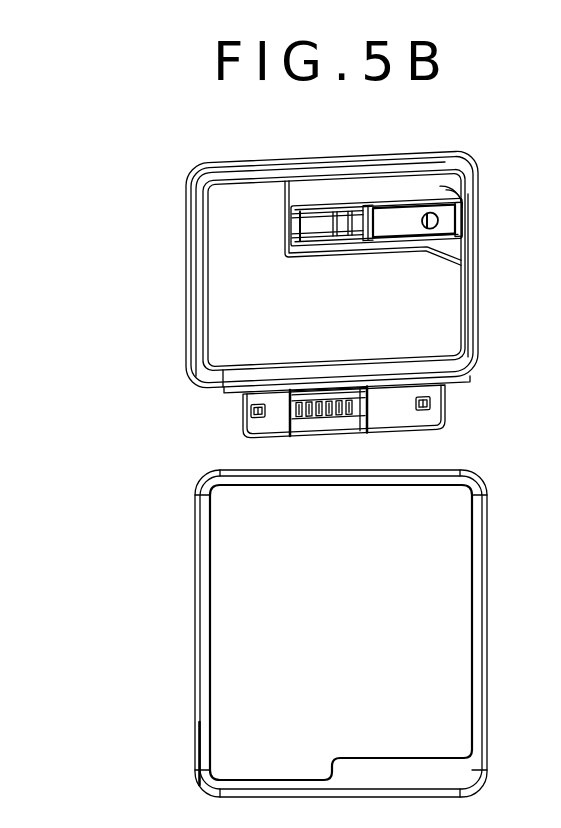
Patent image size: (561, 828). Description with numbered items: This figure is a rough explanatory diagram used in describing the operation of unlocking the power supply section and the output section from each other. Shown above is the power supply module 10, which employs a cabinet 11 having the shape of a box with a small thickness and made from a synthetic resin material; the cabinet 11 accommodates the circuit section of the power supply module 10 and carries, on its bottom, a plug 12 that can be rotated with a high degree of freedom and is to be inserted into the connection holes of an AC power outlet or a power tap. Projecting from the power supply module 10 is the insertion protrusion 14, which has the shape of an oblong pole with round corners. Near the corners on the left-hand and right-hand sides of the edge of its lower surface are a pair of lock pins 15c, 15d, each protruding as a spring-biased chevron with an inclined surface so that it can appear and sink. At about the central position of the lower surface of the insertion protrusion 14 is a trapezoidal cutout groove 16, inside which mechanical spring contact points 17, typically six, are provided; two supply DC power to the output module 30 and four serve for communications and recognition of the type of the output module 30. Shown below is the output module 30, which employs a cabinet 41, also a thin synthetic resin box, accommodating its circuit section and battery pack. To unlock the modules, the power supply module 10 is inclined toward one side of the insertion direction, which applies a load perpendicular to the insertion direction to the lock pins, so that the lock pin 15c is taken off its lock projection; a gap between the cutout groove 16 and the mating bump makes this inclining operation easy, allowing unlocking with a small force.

The power supply module 10 is at (188, 180).
The cabinet 11 is at (220, 254).
The plug 12 is at (398, 222).
The insertion protrusion 14 is at (414, 420).
The lock pin 15c is at (443, 398).
The lock pin 15d is at (250, 410).
The cutout groove 16 is at (340, 428).
The mechanical spring contact points 17 is at (307, 420).
The output module 30 is at (195, 745).
The cabinet 41 is at (233, 667).